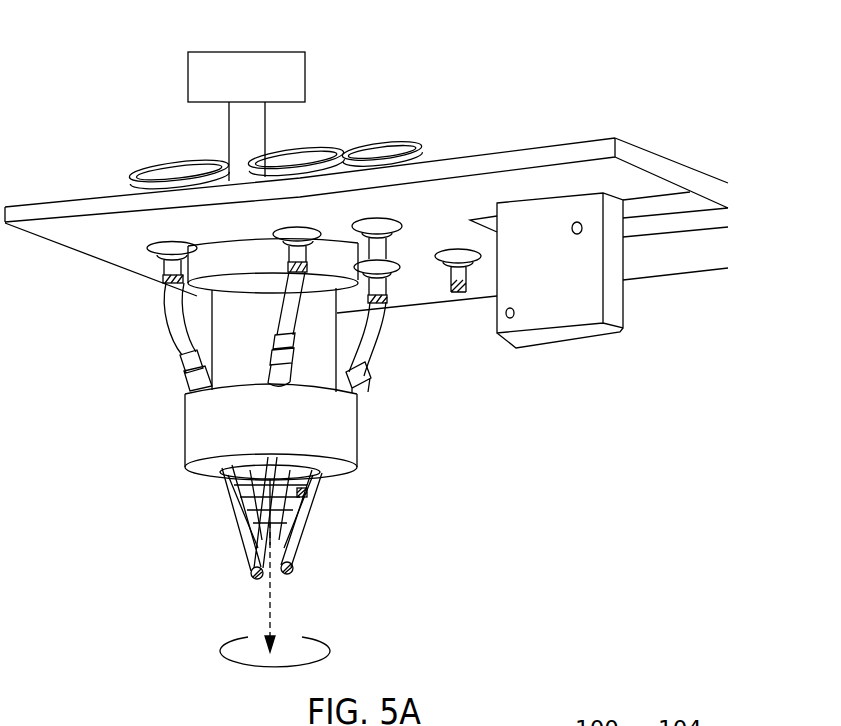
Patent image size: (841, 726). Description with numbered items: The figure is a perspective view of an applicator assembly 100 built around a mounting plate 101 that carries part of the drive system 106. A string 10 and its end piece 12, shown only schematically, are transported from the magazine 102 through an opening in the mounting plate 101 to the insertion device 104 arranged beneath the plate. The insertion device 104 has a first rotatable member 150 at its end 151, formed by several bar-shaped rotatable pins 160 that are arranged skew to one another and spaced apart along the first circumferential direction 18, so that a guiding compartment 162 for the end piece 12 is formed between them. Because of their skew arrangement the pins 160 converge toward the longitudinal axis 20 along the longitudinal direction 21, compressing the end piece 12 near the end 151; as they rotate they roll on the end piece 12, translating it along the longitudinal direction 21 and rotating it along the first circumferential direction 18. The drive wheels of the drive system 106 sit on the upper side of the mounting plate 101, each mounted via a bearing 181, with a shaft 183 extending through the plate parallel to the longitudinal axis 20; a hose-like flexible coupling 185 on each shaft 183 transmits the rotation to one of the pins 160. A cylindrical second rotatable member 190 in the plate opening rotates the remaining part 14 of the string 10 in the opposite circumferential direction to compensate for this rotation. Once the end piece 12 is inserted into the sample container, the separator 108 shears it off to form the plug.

The applicator assembly 100 is at (592, 90).
The mounting plate 101 is at (655, 142).
The magazine 102 is at (185, 68).
The string 10 is at (222, 138).
The remaining part of the string 14 is at (275, 125).
The drive system 106 is at (410, 125).
The second rotatable member 190 is at (204, 236).
The insertion device 104 is at (395, 398).
The separator 108 is at (393, 452).
The shaft 183 is at (160, 276).
The bearing 181 is at (404, 274).
The flexible coupling 185 is at (158, 326).
The first rotatable member 150 is at (215, 495).
The guiding compartment 162 is at (240, 502).
The rotatable pins 160 is at (237, 533).
The end of the insertion device 151 is at (205, 550).
The end piece 12 is at (305, 494).
The longitudinal axis 20 is at (276, 586).
The longitudinal direction 21 is at (295, 633).
The first circumferential direction 18 is at (323, 648).